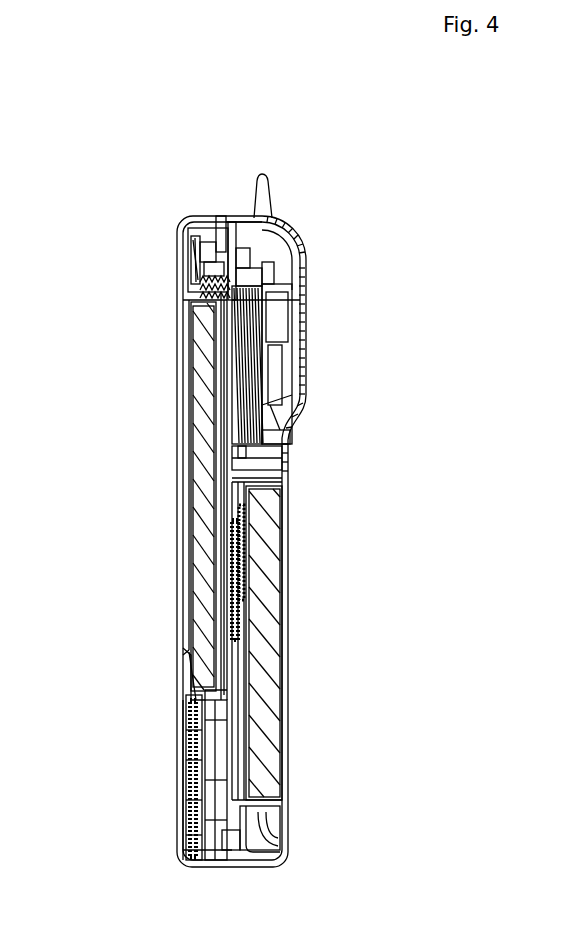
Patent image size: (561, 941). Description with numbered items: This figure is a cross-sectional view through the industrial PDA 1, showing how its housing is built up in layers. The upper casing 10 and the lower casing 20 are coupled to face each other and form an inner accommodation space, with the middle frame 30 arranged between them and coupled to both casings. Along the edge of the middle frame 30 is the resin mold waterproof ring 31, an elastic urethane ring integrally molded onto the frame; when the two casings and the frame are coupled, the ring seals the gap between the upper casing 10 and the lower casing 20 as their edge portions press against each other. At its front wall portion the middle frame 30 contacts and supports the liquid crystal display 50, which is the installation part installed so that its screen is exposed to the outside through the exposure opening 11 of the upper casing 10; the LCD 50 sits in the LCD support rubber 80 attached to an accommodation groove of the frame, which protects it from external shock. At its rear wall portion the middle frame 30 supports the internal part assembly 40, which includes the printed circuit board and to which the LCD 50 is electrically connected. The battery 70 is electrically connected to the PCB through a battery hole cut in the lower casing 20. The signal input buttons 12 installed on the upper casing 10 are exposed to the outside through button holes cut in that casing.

The industrial PDA 1 is at (98, 138).
The upper casing 10 is at (168, 679).
The exposure opening 11 is at (177, 494).
The signal input buttons 12 is at (170, 745).
The lower casing 20 is at (288, 471).
The middle frame 30 is at (200, 232).
The resin mold waterproof ring 31 is at (218, 221).
The internal part assembly 40 is at (292, 356).
The liquid crystal display 50 is at (202, 548).
The battery 70 is at (283, 677).
The LCD support rubber 80 is at (292, 313).